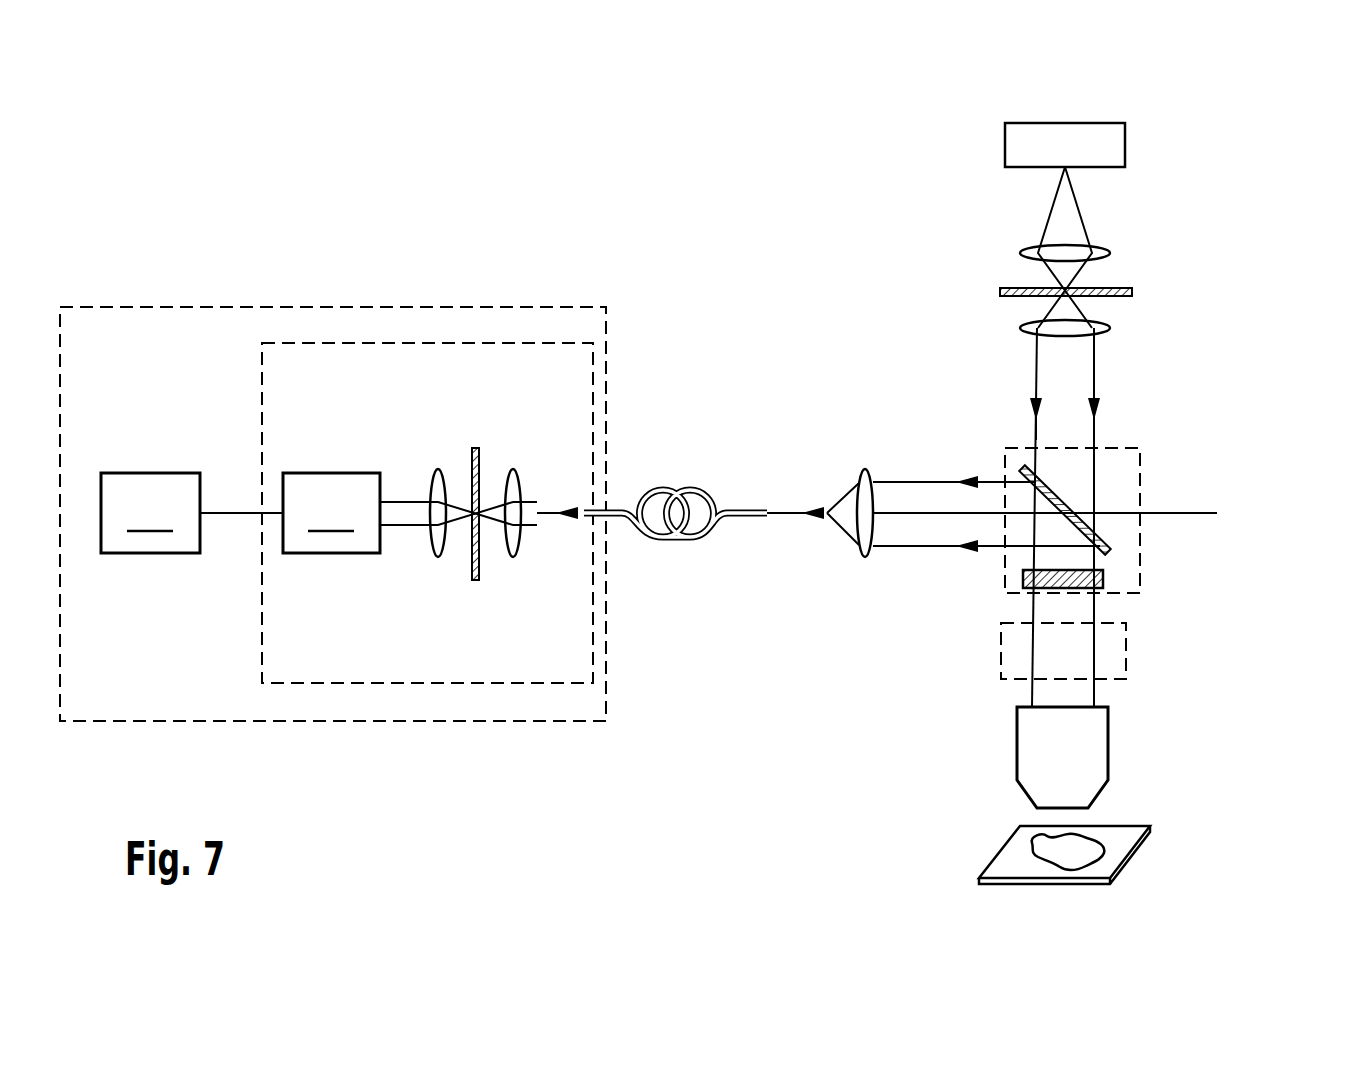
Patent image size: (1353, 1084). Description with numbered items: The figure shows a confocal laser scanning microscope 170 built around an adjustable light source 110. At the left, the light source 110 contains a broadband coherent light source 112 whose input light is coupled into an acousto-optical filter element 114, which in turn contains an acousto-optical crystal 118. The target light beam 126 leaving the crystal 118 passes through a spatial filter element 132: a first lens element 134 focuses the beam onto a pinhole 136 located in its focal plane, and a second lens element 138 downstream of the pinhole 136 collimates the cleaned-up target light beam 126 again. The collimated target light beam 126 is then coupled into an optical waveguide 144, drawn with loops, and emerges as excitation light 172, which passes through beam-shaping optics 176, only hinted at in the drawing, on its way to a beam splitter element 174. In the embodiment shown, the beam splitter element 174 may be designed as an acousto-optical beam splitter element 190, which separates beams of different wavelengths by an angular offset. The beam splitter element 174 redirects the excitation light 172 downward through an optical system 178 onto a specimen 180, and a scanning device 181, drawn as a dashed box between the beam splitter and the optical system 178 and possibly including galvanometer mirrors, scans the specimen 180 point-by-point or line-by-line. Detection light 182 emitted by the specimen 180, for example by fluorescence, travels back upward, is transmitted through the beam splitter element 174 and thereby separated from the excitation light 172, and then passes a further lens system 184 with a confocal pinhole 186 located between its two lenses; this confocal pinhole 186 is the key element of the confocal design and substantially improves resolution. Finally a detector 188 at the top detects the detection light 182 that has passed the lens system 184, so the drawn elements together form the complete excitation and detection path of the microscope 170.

The adjustable light source 110 is at (215, 307).
The broadband coherent light source 112 is at (150, 513).
The acousto-optical filter element 114 is at (262, 395).
The acousto-optical crystal 118 is at (331, 513).
The target light beam 126 is at (548, 518).
The spatial filter element 132 is at (446, 576).
The first lens element 134 is at (433, 470).
The pinhole 136 is at (475, 448).
The second lens element 138 is at (513, 470).
The optical waveguide 144 is at (688, 540).
The microscope 170 is at (642, 790).
The excitation light 172 is at (778, 516).
The beam splitter element 174 is at (1140, 481).
The beam-shaping optics 176 is at (865, 560).
The optical system 178 is at (1095, 768).
The specimen 180 is at (1122, 836).
The scanning device 181 is at (1126, 651).
The detection light 182 is at (1094, 387).
The lens system 184 is at (1110, 253).
The confocal pinhole 186 is at (1000, 292).
The detector 188 is at (1115, 143).
The acousto-optical beam splitter element 190 is at (1064, 510).